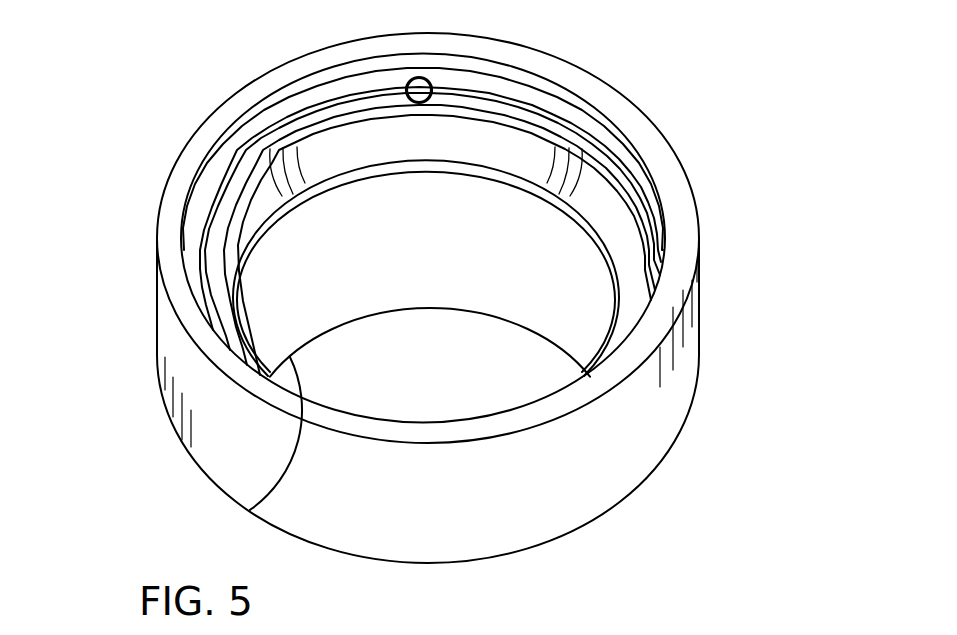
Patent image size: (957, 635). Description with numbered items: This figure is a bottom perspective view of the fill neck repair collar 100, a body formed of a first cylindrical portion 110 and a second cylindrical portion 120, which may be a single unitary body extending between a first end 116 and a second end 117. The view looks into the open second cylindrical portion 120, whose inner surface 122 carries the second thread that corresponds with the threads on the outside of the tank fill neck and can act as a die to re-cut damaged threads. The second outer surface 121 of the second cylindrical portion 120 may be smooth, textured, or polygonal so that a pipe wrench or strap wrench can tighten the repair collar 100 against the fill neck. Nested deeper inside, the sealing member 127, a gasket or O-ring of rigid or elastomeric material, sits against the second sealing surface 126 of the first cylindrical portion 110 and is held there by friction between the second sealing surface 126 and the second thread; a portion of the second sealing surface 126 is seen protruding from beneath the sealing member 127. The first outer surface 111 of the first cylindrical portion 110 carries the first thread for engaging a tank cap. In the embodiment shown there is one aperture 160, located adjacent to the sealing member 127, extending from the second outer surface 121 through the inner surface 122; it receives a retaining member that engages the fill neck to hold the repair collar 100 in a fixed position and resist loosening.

The repair collar 100 is at (154, 56).
The first cylindrical portion 110 is at (430, 334).
The first outer surface 111 is at (250, 510).
The first end 116 is at (322, 357).
The second end 117 is at (688, 132).
The second cylindrical portion 120 is at (647, 362).
The second outer surface 121 is at (560, 487).
The inner surface 122 is at (583, 122).
The second sealing surface 126 is at (240, 262).
The sealing member 127 is at (380, 143).
The aperture 160 is at (422, 86).